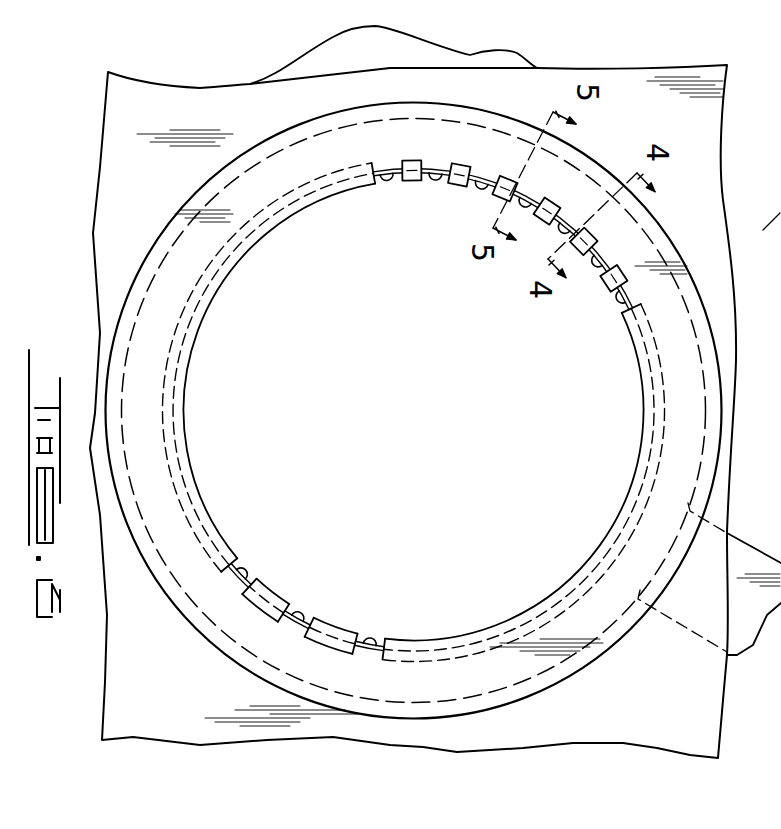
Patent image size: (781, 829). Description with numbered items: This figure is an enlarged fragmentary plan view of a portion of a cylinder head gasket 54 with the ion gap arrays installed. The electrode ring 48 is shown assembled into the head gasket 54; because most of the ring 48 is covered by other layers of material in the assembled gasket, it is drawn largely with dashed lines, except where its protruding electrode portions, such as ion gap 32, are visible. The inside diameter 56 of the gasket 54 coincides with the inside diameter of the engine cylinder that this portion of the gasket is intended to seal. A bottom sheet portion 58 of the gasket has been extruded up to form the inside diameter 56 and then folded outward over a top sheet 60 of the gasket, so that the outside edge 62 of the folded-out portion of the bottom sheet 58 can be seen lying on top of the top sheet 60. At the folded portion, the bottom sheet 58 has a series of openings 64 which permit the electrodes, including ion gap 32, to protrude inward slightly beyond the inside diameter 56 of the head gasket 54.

The ion gap 32 is at (523, 203).
The electrode ring 48 is at (682, 626).
The cylinder head gasket 54 is at (98, 126).
The inside diameter 56 is at (413, 412).
The bottom sheet portion 58 is at (471, 53).
The top sheet 60 is at (176, 117).
The outside edge 62 is at (414, 411).
The openings 64 is at (387, 180).